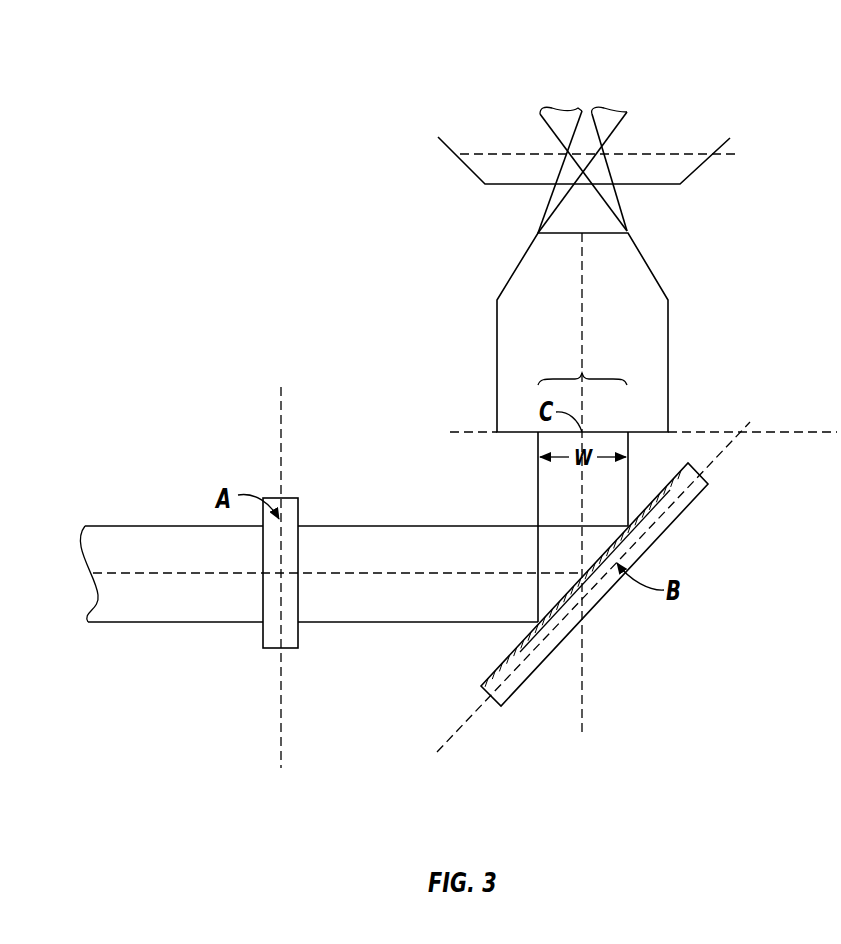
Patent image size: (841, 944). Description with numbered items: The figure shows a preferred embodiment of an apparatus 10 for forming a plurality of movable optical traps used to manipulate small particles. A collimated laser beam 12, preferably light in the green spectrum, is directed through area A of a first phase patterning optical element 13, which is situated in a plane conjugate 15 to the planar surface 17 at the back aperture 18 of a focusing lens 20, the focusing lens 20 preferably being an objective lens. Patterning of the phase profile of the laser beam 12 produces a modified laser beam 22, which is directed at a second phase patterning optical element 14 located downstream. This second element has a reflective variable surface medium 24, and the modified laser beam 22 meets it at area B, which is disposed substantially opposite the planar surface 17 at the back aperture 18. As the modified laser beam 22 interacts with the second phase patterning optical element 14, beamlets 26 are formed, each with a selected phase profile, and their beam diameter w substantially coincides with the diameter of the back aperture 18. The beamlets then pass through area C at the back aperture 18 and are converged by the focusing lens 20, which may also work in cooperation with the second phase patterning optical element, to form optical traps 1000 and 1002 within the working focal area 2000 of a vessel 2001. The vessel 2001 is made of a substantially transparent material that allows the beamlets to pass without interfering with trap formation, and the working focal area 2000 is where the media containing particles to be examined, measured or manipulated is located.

The apparatus for forming a plurality of movable optical traps 10 is at (256, 96).
The laser beam 12 is at (183, 536).
The first phase patterning optical element 13 is at (270, 650).
The second phase patterning optical element 14 is at (498, 697).
The plane conjugate 15 is at (283, 431).
The planar surface 17 is at (788, 433).
The back aperture 18 is at (582, 373).
The focusing lens 20 is at (650, 354).
The modified laser beam 22 is at (372, 538).
The reflective variable surface medium 24 is at (557, 601).
The beamlet 26 is at (536, 478).
The optical trap 1000 is at (620, 117).
The optical trap 1002 is at (545, 123).
The working focal area 2000 is at (738, 154).
The vessel 2001 is at (697, 168).